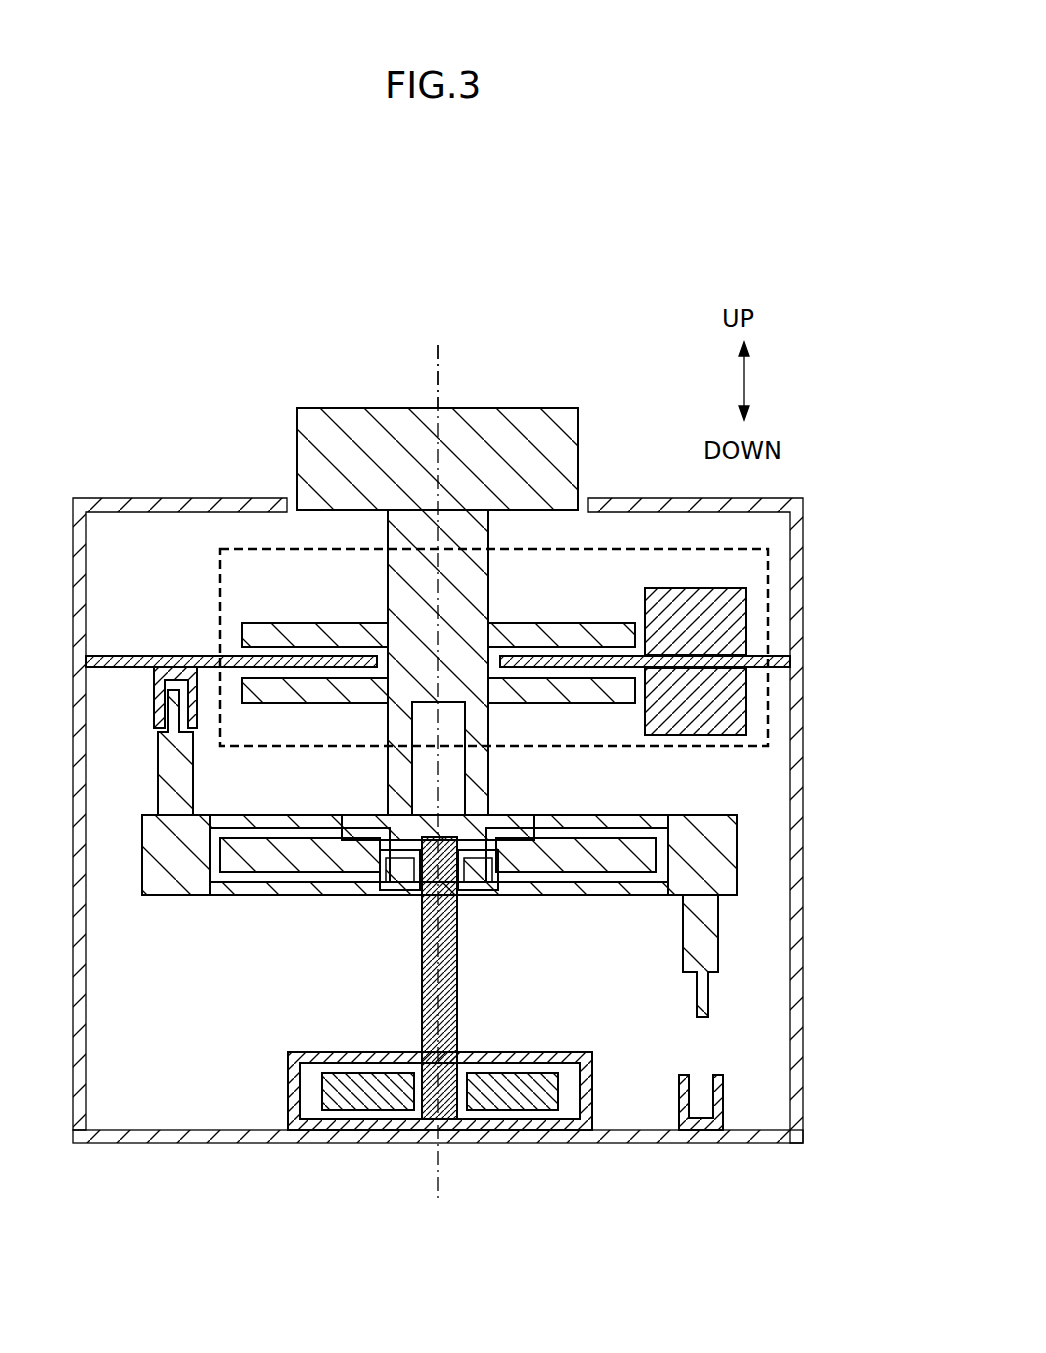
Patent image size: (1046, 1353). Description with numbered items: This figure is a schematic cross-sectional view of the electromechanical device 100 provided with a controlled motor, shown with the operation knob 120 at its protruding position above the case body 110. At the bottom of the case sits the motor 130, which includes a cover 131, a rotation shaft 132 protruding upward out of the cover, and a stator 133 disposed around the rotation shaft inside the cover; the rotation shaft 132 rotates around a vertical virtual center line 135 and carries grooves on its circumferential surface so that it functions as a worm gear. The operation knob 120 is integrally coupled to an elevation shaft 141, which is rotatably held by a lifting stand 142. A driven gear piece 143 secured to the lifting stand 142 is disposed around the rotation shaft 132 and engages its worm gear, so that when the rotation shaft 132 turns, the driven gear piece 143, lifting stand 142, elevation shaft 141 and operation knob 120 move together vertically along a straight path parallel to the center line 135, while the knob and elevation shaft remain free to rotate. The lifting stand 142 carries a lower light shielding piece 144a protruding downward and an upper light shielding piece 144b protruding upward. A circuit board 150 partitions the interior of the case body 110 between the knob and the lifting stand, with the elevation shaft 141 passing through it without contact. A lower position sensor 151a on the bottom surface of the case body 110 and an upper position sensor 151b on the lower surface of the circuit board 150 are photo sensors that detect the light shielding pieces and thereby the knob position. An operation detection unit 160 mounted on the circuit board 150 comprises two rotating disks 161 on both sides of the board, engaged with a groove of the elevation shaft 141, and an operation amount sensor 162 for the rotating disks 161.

The electromechanical device 100 is at (262, 350).
The case body 110 is at (112, 500).
The operation knob 120 is at (528, 437).
The motor 130 is at (322, 1145).
The cover 131 is at (283, 1108).
The rotation shaft 132 is at (470, 1028).
The stator 133 is at (315, 1092).
The center line 135 is at (432, 375).
The elevation shaft 141 is at (392, 518).
The lifting stand 142 is at (150, 842).
The driven gear piece 143 is at (422, 912).
The lower light shielding piece 144a is at (694, 993).
The upper light shielding piece 144b is at (194, 766).
The circuit board 150 is at (130, 656).
The lower position sensor 151a is at (742, 1118).
The upper position sensor 151b is at (154, 692).
The operation detection unit 160 is at (214, 578).
The rotating disks 161 is at (278, 628).
The operation amount sensor 162 is at (667, 590).